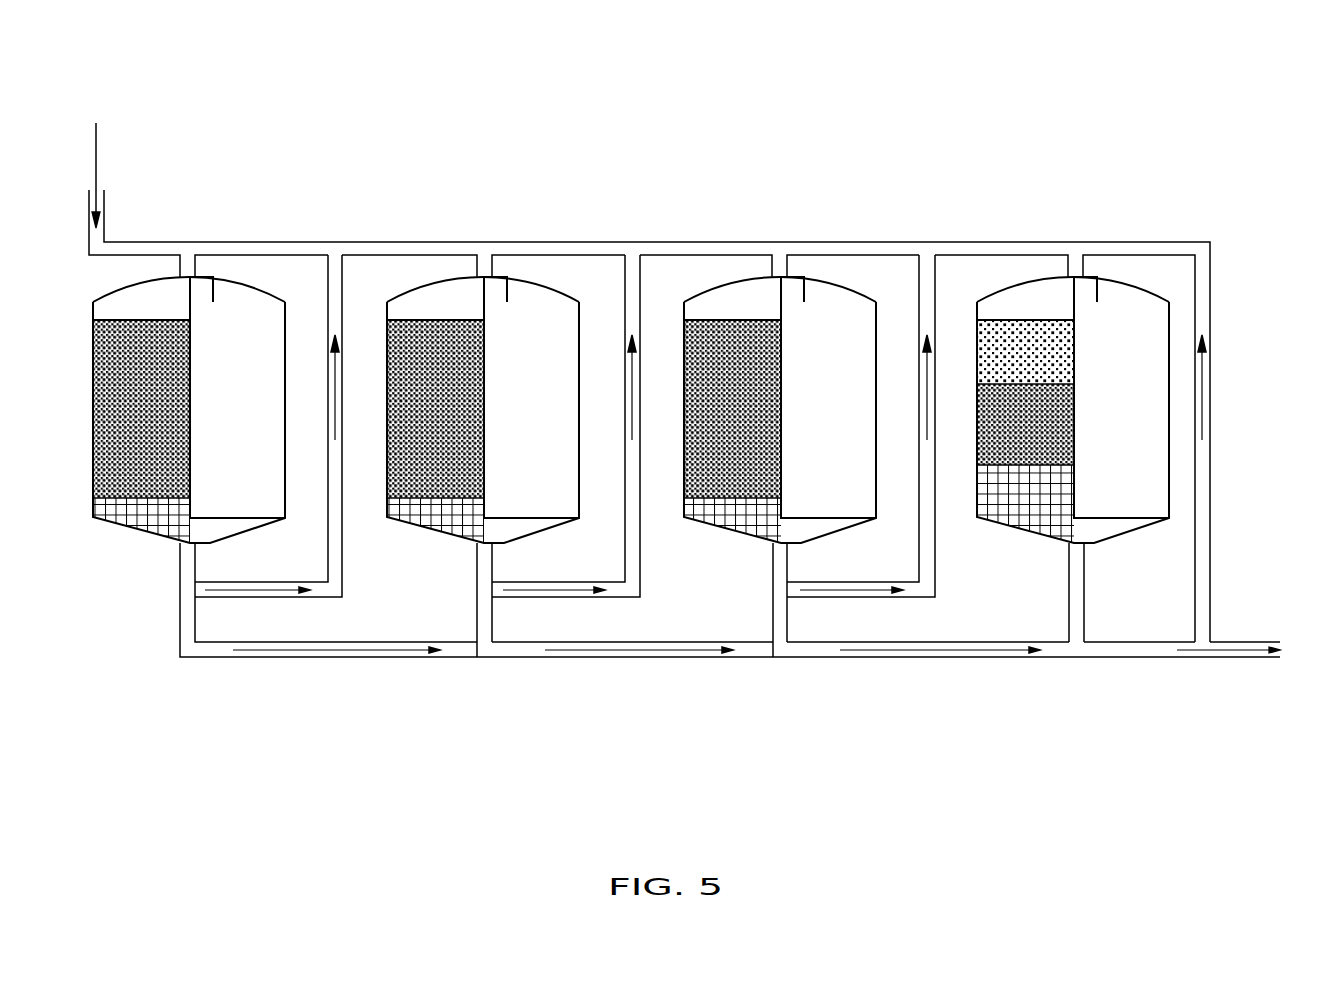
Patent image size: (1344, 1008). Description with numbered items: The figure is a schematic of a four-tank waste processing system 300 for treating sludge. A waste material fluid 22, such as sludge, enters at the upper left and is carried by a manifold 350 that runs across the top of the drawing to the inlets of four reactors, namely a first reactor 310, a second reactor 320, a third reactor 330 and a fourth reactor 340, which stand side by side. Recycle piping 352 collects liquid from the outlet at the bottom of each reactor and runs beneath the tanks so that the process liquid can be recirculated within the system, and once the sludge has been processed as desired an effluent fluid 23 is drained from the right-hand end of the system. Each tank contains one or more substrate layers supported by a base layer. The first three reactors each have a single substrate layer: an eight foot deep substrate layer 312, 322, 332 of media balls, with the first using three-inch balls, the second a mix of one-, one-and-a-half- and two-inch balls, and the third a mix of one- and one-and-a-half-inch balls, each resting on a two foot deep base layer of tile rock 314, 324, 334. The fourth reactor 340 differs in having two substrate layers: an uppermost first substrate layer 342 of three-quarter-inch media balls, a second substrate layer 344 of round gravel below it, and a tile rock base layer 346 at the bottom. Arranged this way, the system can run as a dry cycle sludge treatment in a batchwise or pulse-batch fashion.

The waste material fluid 22 is at (96, 142).
The effluent fluid 23 is at (1237, 647).
The waste processing system 300 is at (1015, 103).
The first reactor 310 is at (160, 575).
The substrate layer 312 is at (134, 338).
The base layer of tile rock 314 is at (143, 523).
The second reactor 320 is at (460, 570).
The substrate layer 322 is at (447, 347).
The base layer of tile rock 324 is at (458, 527).
The third reactor 330 is at (758, 562).
The substrate layer 332 is at (745, 350).
The base layer of tile rock 334 is at (755, 525).
The fourth reactor 340 is at (1050, 562).
The first substrate layer 342 is at (1037, 338).
The second substrate layer 344 is at (1047, 427).
The tile rock base layer 346 is at (1037, 527).
The manifold 350 is at (687, 240).
The recycle piping 352 is at (300, 600).